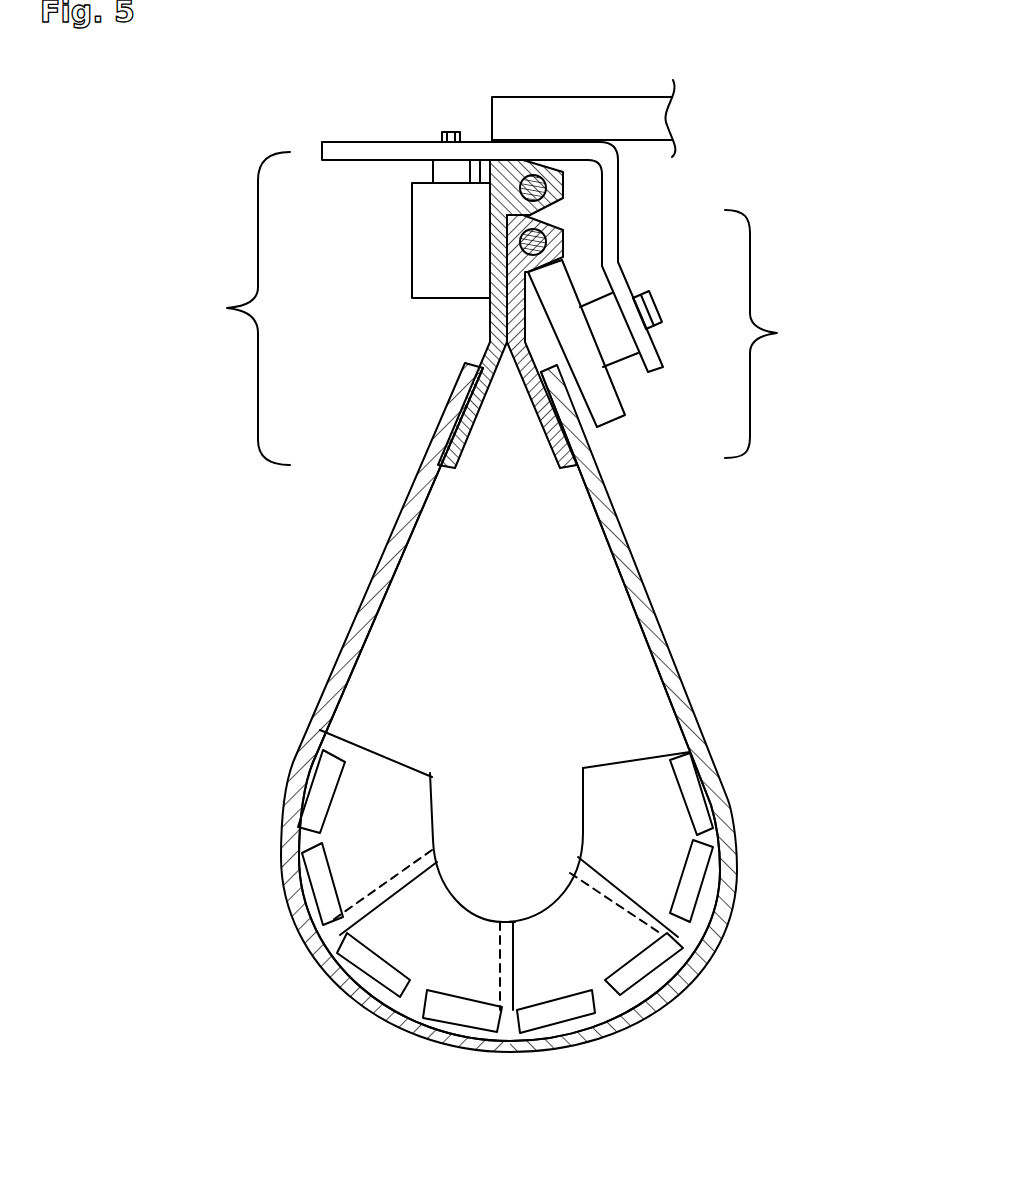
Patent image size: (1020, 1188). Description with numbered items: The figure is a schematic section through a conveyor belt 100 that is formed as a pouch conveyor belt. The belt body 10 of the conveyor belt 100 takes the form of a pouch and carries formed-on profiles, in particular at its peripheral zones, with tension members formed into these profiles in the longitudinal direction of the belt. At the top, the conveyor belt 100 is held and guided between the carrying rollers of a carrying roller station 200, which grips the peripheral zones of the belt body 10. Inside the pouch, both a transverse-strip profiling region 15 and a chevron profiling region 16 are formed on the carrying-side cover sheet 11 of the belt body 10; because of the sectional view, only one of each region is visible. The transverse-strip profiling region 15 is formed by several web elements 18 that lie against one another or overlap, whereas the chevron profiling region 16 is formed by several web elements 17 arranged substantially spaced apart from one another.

The carrying roller station 200 is at (795, 130).
The conveyor belt 100 is at (467, 707).
The belt body 10 is at (352, 657).
The carrying-side cover sheet 11 is at (373, 627).
The transverse-strip profiling region 15 is at (604, 745).
The chevron profiling region 16 is at (350, 857).
The web elements 17 is at (317, 793).
The web elements 18 is at (563, 923).